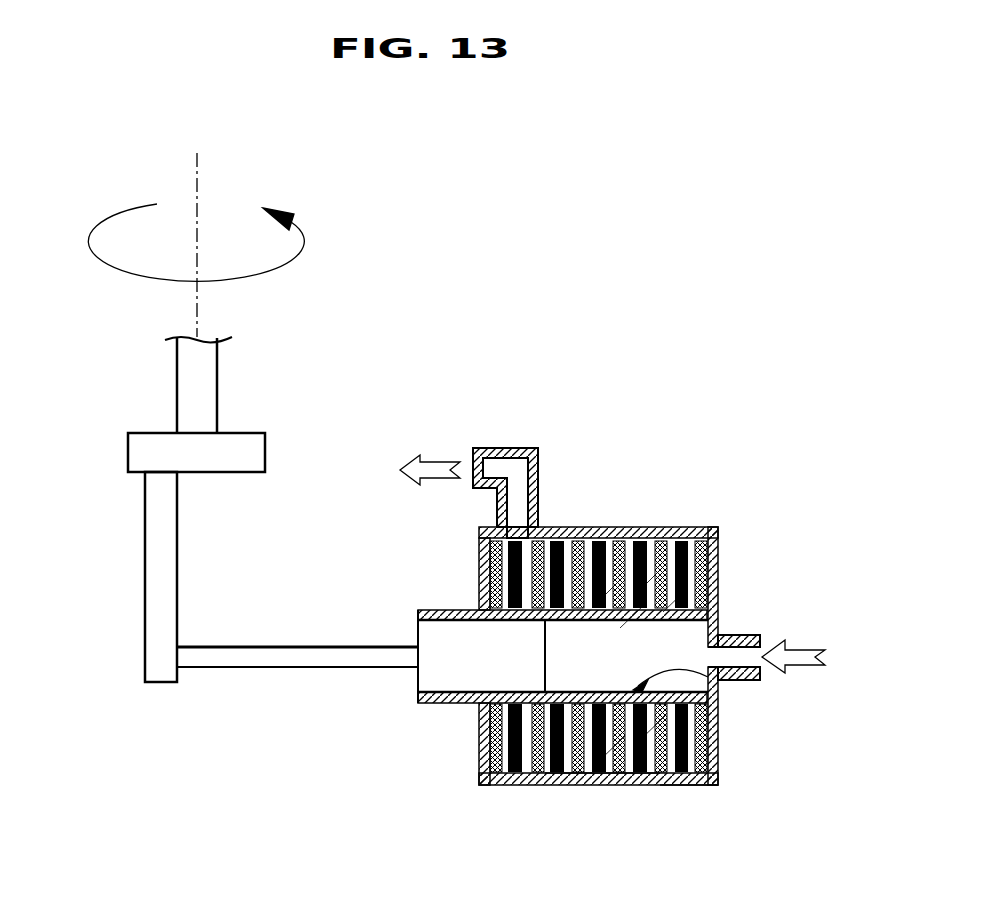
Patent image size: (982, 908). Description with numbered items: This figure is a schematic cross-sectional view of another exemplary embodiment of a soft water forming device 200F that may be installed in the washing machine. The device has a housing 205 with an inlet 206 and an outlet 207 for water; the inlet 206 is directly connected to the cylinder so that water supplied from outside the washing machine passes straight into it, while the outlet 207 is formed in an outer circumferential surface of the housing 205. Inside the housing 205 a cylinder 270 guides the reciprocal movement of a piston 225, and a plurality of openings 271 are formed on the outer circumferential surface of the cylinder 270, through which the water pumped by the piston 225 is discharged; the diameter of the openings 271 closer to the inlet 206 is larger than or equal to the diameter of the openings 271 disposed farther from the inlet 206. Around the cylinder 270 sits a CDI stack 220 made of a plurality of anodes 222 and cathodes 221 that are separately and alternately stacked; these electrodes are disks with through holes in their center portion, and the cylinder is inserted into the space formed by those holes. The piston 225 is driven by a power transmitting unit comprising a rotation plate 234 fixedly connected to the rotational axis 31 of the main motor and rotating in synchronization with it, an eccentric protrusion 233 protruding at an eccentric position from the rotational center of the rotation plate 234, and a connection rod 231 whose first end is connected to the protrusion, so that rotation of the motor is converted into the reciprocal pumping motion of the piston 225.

The rotational axis 31 is at (187, 386).
The rotation plate 234 is at (142, 452).
The eccentric protrusion 233 is at (150, 577).
The connection rod 231 is at (265, 652).
The piston 225 is at (440, 632).
The outlet 207 is at (517, 493).
The inlet 206 is at (722, 654).
The soft water forming device 200F is at (730, 513).
The anodes 222 is at (640, 540).
The cathodes 221 is at (706, 538).
The openings 271 is at (712, 579).
The cylinder 270 is at (718, 675).
The CDI stack 220 is at (603, 792).
The housing 205 is at (672, 788).